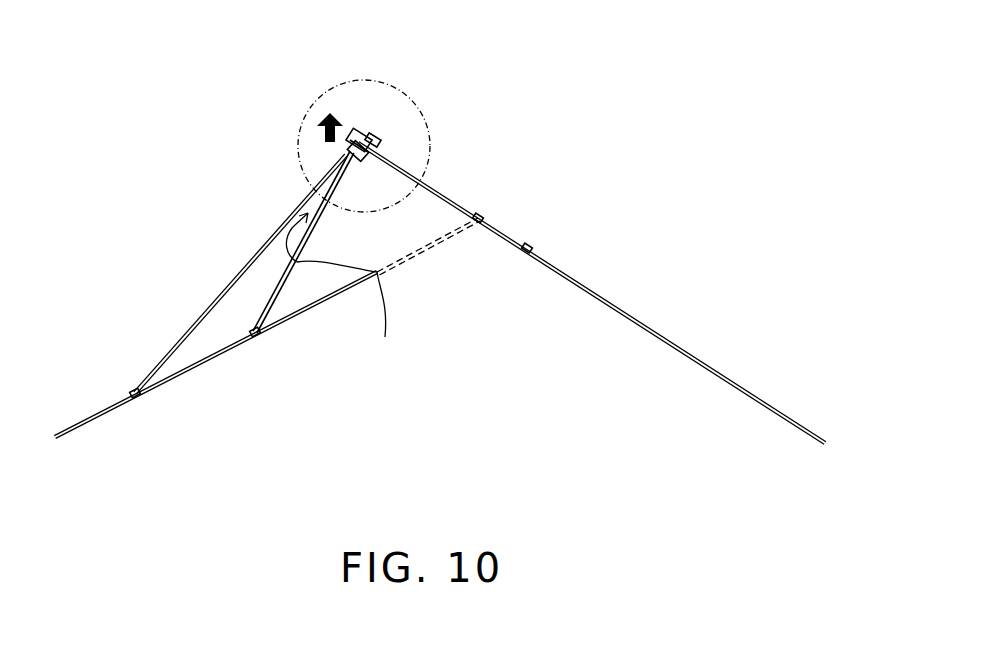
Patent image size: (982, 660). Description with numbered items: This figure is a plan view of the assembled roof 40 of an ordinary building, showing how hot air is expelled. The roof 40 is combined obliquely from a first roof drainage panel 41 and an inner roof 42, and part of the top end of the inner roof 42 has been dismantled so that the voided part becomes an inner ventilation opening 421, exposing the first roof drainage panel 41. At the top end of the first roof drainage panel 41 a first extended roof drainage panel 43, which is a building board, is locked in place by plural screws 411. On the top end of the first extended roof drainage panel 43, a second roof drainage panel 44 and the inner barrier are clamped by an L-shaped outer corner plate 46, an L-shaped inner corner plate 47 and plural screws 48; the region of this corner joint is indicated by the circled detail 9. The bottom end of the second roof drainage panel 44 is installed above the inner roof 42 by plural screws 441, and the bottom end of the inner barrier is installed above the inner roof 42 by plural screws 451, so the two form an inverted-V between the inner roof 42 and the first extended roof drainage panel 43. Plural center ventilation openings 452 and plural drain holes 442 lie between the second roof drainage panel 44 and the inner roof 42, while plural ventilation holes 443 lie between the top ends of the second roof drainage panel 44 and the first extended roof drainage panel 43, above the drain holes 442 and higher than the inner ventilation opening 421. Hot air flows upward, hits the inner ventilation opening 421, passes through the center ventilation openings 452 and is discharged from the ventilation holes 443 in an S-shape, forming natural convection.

The roof 40 is at (682, 203).
The detail region 9 is at (432, 128).
The first roof drainage panel 41 is at (665, 338).
The first extended roof drainage panel 43 is at (452, 198).
The screws 411 is at (522, 252).
The inner roof 42 is at (233, 347).
The inner ventilation opening 421 is at (440, 262).
The drain holes 442 is at (135, 380).
The screws 441 is at (133, 402).
The second roof drainage panel 44 is at (227, 287).
The ventilation holes 443 is at (342, 167).
The center ventilation openings 452 is at (270, 323).
The screws 451 is at (260, 338).
The outer corner plate 46 is at (357, 138).
The screws 48 is at (370, 140).
The inner corner plate 47 is at (362, 152).